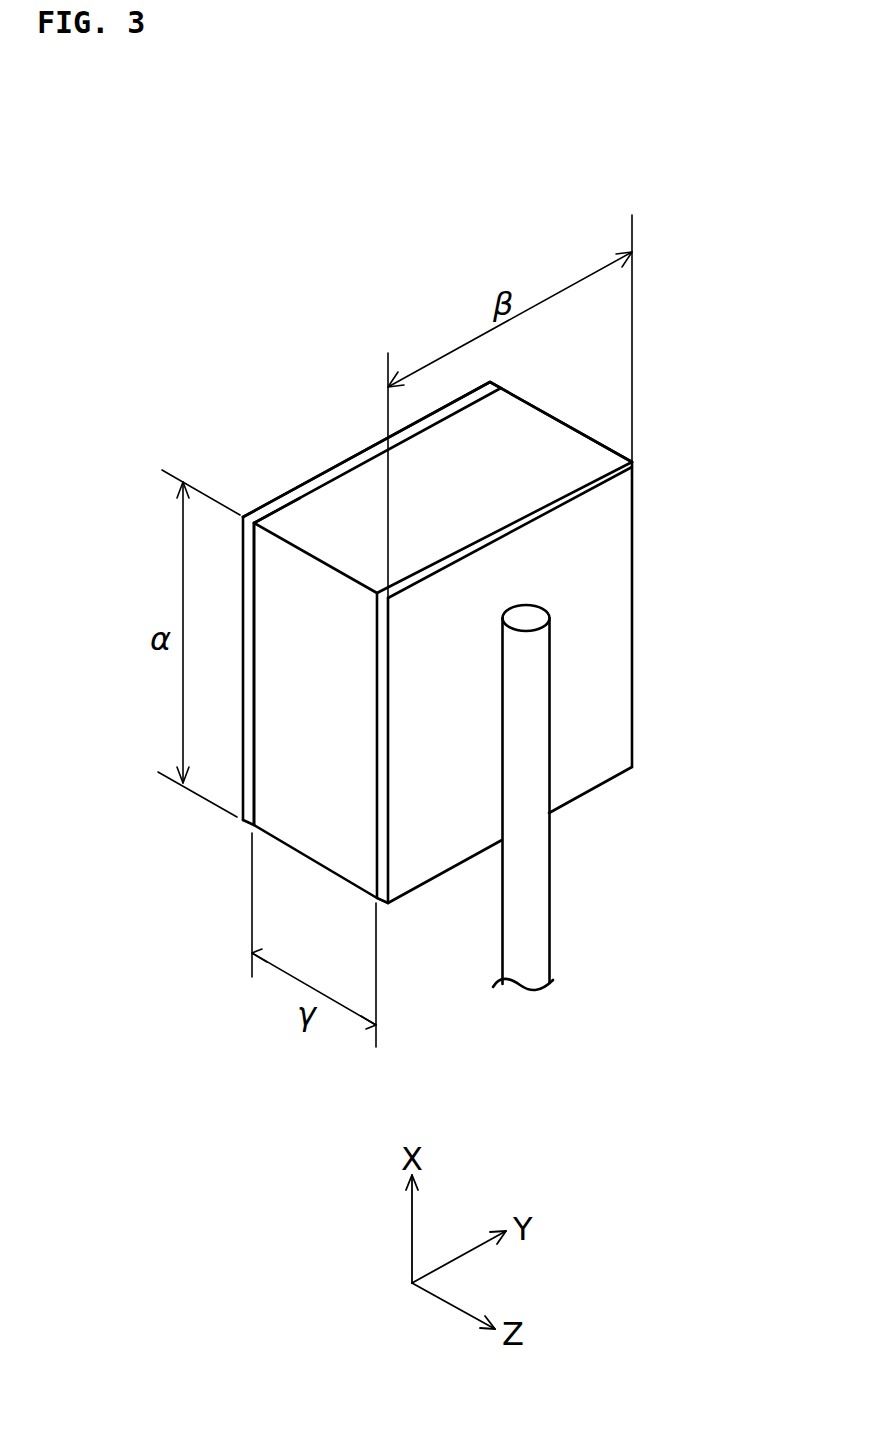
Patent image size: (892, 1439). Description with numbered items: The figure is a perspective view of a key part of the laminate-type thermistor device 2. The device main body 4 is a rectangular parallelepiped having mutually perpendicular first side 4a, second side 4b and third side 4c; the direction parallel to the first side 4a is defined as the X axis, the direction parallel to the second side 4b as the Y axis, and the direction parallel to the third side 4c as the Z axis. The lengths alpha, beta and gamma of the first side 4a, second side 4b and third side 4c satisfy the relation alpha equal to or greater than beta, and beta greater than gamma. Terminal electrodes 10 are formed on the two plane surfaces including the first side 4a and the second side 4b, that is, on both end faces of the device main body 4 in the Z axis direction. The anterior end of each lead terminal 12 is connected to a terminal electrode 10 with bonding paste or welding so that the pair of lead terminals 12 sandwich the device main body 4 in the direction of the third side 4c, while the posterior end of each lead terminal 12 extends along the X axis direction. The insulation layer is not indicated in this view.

The laminate-type thermistor device 2 is at (432, 639).
The device main body 4 is at (343, 506).
The first side 4a is at (250, 765).
The second side 4b is at (515, 508).
The third side 4c is at (309, 548).
The terminal electrode 10 is at (346, 457).
The lead terminal 12 is at (535, 915).